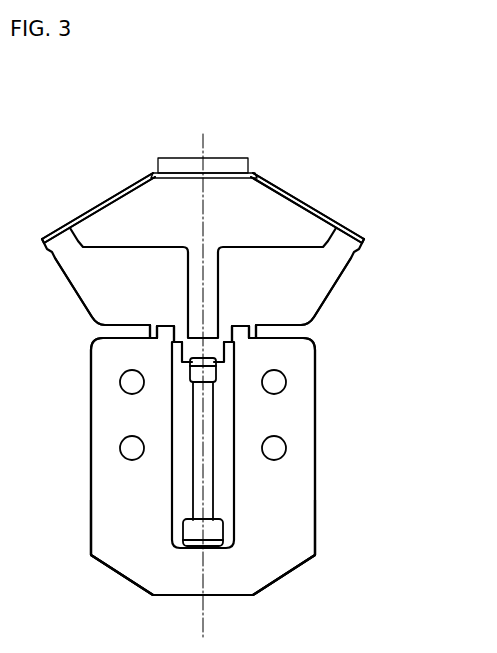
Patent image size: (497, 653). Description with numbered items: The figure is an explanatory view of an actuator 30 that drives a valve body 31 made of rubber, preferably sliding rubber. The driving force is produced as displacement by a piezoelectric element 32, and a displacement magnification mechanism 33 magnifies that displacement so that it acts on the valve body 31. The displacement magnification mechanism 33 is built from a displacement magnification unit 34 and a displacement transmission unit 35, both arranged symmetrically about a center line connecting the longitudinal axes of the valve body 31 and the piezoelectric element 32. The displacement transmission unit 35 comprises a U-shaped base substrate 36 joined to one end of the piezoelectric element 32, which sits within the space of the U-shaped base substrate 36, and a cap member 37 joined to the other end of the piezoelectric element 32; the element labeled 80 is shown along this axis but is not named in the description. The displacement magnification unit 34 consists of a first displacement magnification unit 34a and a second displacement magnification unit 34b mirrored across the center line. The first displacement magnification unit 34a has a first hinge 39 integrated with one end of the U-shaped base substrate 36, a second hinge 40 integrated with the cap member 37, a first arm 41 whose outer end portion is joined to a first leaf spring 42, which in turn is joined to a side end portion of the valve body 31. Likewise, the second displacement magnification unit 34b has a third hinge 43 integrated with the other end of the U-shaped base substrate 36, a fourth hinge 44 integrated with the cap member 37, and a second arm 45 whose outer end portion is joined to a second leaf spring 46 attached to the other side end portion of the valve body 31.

The actuator 30 is at (288, 104).
The valve body 31 is at (184, 166).
The piezoelectric element 32 is at (210, 490).
The displacement magnification mechanism 33 is at (392, 366).
The displacement magnification unit 34 is at (405, 289).
The first displacement magnification unit 34a is at (345, 162).
The second displacement magnification unit 34b is at (71, 155).
The displacement transmission unit 35 is at (352, 470).
The U-shaped base substrate 36 is at (128, 538).
The cap member 37 is at (182, 346).
The first hinge 39 is at (259, 326).
The second hinge 40 is at (229, 328).
The first arm 41 is at (320, 300).
The first leaf spring 42 is at (306, 200).
The third hinge 43 is at (147, 326).
The fourth hinge 44 is at (177, 328).
The second arm 45 is at (86, 300).
The second leaf spring 46 is at (100, 200).
The threaded rod 80 is at (184, 482).